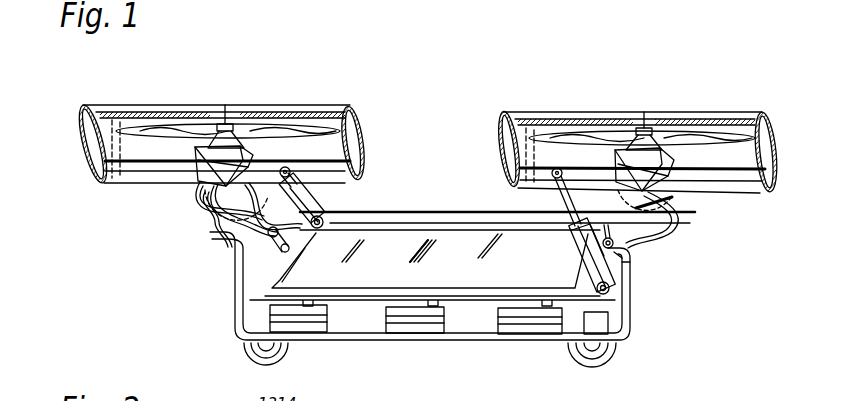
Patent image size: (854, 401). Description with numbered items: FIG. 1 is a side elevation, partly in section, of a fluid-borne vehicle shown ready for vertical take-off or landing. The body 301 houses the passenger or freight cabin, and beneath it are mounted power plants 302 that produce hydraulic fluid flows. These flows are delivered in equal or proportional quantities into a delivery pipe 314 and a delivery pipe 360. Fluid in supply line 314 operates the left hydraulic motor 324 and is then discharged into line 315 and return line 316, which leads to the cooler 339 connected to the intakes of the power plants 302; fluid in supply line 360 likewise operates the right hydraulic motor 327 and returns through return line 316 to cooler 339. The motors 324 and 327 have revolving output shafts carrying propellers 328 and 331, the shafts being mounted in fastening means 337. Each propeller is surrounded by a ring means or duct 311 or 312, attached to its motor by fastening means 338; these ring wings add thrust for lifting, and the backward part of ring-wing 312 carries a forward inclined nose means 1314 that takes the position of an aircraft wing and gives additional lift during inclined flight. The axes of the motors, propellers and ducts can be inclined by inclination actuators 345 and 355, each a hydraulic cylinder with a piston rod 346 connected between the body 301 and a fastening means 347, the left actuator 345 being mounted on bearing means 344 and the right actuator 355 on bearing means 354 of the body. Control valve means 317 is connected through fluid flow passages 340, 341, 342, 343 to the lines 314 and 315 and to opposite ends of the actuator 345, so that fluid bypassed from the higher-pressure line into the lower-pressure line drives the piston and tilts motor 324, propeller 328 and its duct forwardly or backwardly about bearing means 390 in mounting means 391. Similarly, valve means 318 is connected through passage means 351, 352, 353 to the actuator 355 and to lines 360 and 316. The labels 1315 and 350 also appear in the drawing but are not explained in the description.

The duct or ring means 311 is at (84, 106).
The duct or ring means 312 is at (504, 112).
The duct top wall 1315 is at (136, 112).
The forward inclined nose means 1314 is at (351, 108).
The return line 316 is at (105, 146).
The fastening means 338 is at (346, 165).
The propeller 328 is at (292, 126).
The propeller 331 is at (704, 132).
The fastening means 337 is at (222, 112).
The hydraulic motor 324 is at (198, 160).
The hydraulic motor 327 is at (668, 172).
The bearing means 390 is at (214, 186).
The mounting means 391 is at (200, 196).
The fluid flow passage 341 is at (212, 214).
The fluid flow passage 340 is at (216, 230).
The delivery pipe 314 is at (235, 312).
The line 315 is at (448, 212).
The bearing means 344 is at (332, 223).
The body 301 is at (432, 264).
The delivery pipe 360 is at (468, 288).
The power plants 302 is at (298, 326).
The cooling means 339 is at (610, 318).
The fastening means 347 is at (290, 162).
The piston rod 346 is at (296, 180).
The inclination actuator means 345 is at (318, 196).
The fluid flow passage 342 is at (322, 227).
The control valve means 317 is at (270, 236).
The fluid flow passage 343 is at (300, 252).
The passage means 353 is at (652, 232).
The passage means 352 is at (614, 246).
The passage means 351 is at (622, 258).
The frame corner 350 is at (630, 268).
The control valve means 318 is at (580, 250).
The inclination actuator 355 is at (576, 236).
The bearing means 354 is at (596, 288).